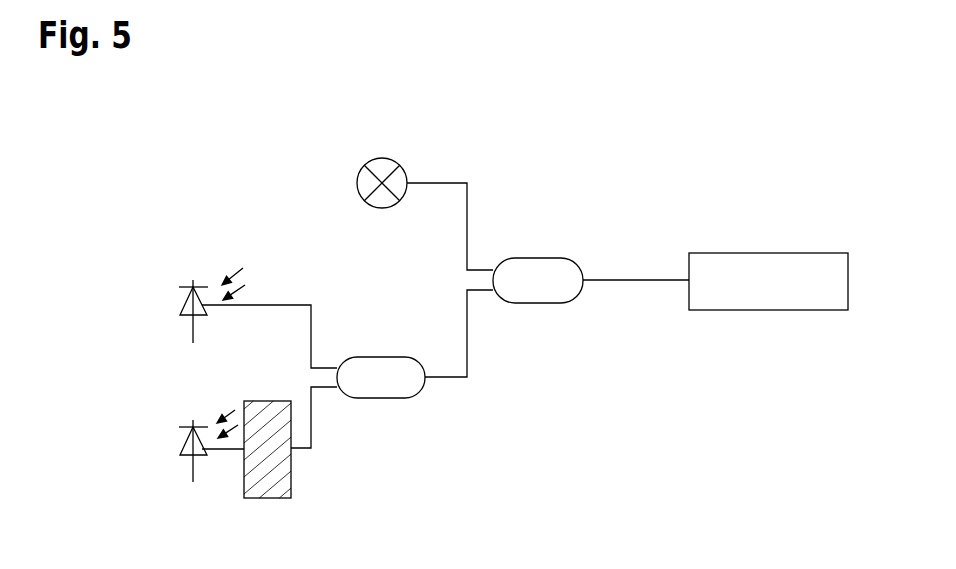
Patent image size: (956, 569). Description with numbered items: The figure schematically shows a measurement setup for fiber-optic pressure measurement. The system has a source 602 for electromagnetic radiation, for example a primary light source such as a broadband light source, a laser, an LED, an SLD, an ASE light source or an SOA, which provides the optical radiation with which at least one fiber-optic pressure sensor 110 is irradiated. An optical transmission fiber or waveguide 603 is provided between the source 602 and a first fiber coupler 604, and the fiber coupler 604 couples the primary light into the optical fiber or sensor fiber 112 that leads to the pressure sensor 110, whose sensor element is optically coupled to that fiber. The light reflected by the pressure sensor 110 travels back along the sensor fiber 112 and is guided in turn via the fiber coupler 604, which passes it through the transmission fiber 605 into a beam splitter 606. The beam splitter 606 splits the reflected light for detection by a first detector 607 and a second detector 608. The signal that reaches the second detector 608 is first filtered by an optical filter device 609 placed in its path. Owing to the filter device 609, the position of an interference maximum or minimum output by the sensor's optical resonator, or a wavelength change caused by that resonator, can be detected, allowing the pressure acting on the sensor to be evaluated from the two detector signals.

The fiber-optic pressure sensor 110 is at (778, 253).
The sensor fiber 112 is at (638, 280).
The source 602 is at (381, 158).
The waveguide 603 is at (452, 182).
The first fiber coupler 604 is at (540, 258).
The transmission fiber 605 is at (455, 380).
The beam splitter 606 is at (380, 400).
The first detector 607 is at (192, 330).
The second detector 608 is at (192, 470).
The optical filter device 609 is at (268, 401).